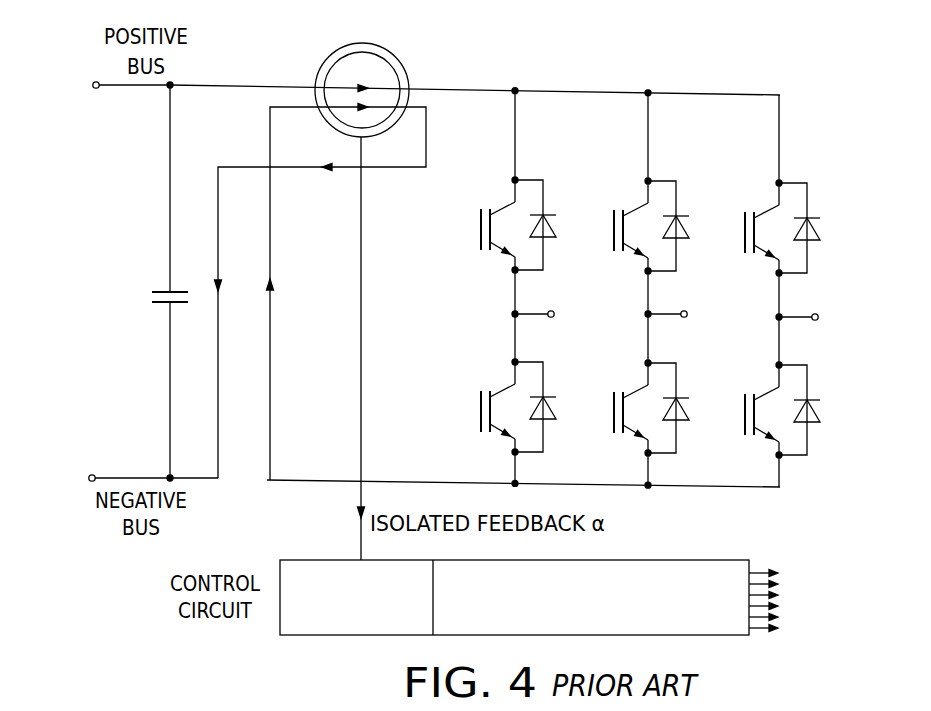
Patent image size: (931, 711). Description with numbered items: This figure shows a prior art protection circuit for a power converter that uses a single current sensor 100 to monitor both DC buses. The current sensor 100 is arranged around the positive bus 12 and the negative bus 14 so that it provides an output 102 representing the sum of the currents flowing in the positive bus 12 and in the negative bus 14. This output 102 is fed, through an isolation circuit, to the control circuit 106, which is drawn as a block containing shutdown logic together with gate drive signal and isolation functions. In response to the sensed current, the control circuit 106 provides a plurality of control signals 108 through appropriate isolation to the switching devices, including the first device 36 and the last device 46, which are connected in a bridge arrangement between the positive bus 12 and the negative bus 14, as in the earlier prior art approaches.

The positive bus 12 is at (566, 92).
The negative bus 14 is at (420, 480).
The device 36 is at (527, 190).
The device 46 is at (790, 392).
The current sensor 100 is at (402, 66).
The output 102 is at (358, 242).
The control circuit 106 is at (662, 562).
The control signals 108 is at (795, 597).